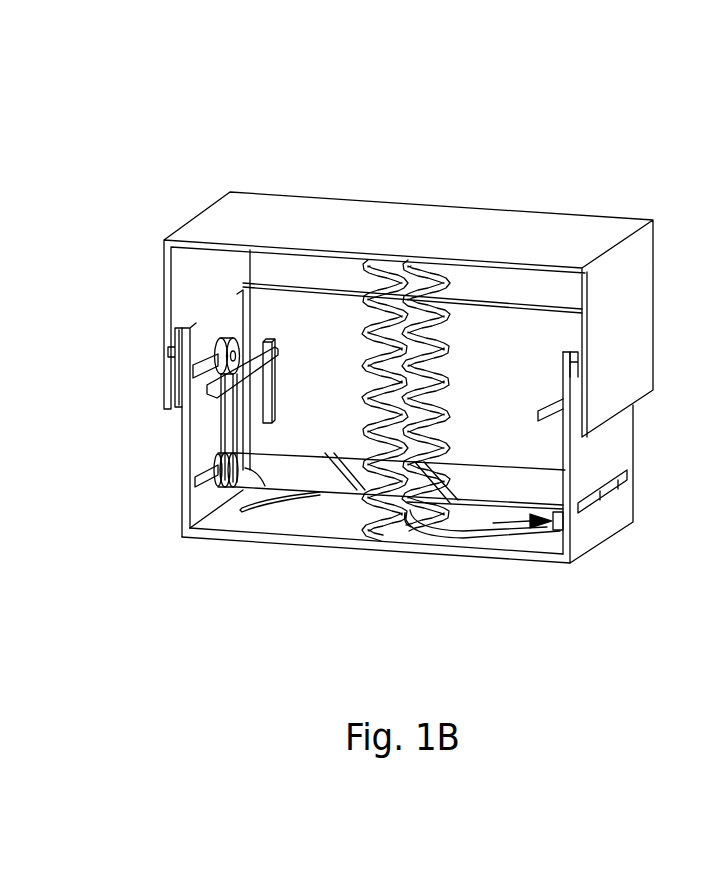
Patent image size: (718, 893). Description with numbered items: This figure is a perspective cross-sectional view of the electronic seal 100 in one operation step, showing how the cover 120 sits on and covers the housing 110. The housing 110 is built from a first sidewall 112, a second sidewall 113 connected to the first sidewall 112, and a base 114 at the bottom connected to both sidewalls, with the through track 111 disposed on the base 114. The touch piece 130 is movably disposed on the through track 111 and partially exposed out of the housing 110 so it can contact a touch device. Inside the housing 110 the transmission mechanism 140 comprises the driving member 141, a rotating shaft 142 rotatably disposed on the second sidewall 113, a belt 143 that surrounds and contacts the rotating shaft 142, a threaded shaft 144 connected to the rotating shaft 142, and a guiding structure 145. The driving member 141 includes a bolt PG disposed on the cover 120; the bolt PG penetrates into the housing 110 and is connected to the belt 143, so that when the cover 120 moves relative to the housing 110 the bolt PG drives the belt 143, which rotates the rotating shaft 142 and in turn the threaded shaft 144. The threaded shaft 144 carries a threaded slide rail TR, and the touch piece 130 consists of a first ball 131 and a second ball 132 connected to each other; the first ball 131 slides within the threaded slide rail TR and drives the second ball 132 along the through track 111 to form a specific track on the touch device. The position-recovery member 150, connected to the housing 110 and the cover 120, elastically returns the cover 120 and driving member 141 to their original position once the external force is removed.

The electronic seal 100 is at (152, 72).
The housing 110 is at (593, 530).
The through track 111 is at (240, 511).
The first sidewall 112 is at (306, 288).
The second sidewall 113 is at (187, 418).
The base 114 is at (355, 548).
The cover 120 is at (481, 233).
The touch piece 130 is at (493, 523).
The first ball 131 is at (565, 512).
The second ball 132 is at (538, 532).
The transmission mechanism 140 is at (216, 322).
The driving member 141 is at (300, 344).
The rotating shaft 142 is at (246, 335).
The belt 143 is at (221, 333).
The threaded shaft 144 is at (305, 476).
The guiding structure 145 is at (195, 373).
The position-recovery member 150 is at (368, 280).
The bolt PG is at (276, 358).
The threaded slide rail TR is at (518, 470).